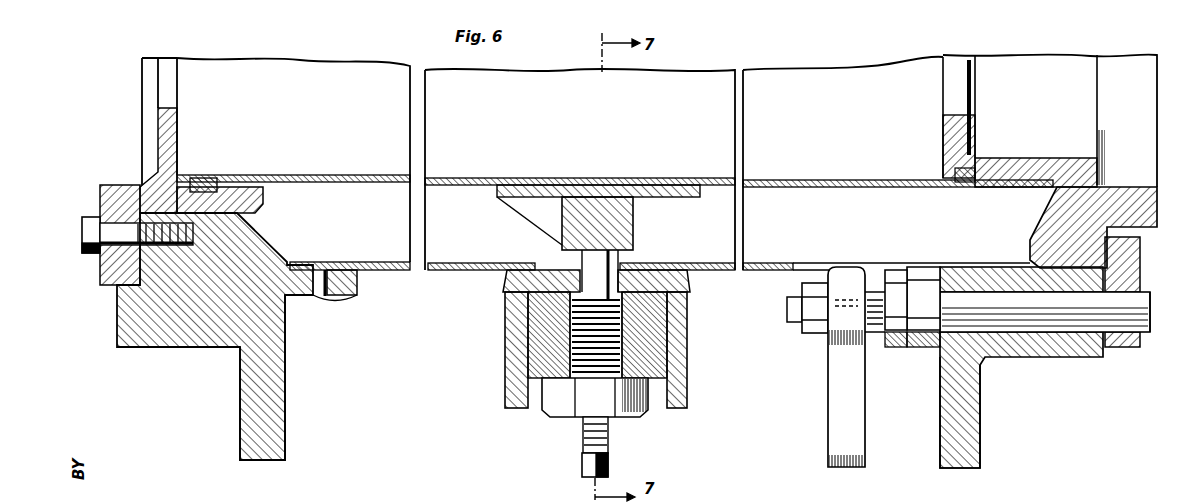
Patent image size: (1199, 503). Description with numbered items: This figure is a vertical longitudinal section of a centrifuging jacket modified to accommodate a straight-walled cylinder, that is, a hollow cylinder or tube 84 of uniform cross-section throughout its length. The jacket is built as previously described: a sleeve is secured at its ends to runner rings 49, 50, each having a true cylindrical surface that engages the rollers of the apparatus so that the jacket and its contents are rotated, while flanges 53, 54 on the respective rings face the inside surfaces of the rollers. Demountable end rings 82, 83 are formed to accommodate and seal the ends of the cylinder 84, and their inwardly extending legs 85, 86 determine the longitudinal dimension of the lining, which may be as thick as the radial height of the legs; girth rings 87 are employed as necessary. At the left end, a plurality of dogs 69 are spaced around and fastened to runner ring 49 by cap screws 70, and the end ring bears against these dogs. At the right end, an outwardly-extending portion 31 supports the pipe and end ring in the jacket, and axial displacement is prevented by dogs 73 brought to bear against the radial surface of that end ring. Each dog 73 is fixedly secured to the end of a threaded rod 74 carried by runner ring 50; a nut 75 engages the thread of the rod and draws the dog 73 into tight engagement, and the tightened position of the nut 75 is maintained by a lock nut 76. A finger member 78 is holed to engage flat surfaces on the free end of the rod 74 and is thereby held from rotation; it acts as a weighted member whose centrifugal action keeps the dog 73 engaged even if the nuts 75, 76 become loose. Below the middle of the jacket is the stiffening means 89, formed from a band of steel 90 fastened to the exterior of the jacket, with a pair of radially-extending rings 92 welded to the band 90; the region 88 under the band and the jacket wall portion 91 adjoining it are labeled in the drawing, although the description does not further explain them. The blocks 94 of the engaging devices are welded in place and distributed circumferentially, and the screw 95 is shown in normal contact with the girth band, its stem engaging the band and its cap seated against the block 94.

The outwardly-extending portion 31 is at (1132, 186).
The runner ring 49 is at (116, 310).
The runner ring 50 is at (1093, 360).
The flange 53 is at (243, 421).
The flange 54 is at (960, 455).
The dog 69 is at (102, 190).
The cap screw 70 is at (82, 221).
The dog 73 is at (1126, 254).
The threaded rod 74 is at (1053, 318).
The nut 75 is at (932, 352).
The lock nut 76 is at (893, 352).
The finger member 78 is at (836, 414).
The demountable end ring 82 is at (143, 101).
The demountable end ring 83 is at (1036, 160).
The hollow cylinder 84 is at (340, 175).
The inwardly extending leg 85 is at (166, 127).
The inwardly extending leg 86 is at (942, 128).
The girth ring 87 is at (620, 219).
The recess 88 is at (461, 285).
The stiffening means 89 is at (587, 373).
The band of steel 90 is at (690, 282).
The lower plate 91 is at (465, 263).
The radially-extending ring 92 is at (508, 328).
The block 94 is at (650, 338).
The screw 95 is at (560, 410).